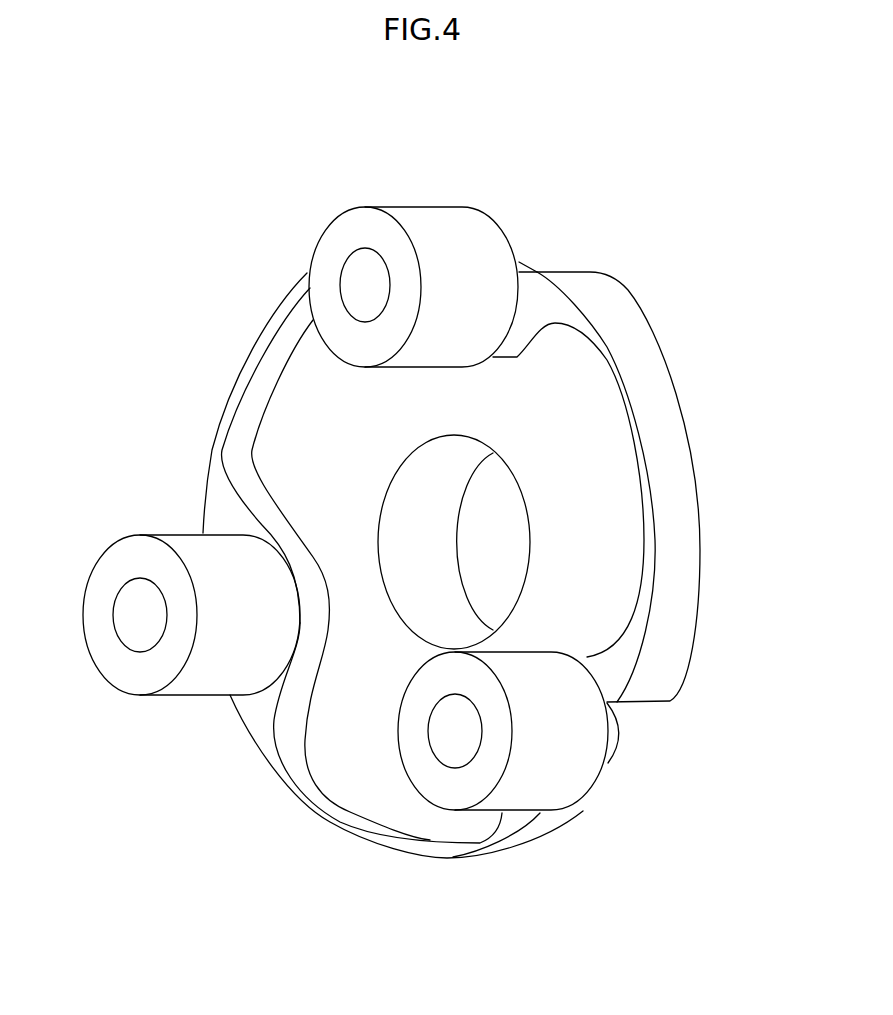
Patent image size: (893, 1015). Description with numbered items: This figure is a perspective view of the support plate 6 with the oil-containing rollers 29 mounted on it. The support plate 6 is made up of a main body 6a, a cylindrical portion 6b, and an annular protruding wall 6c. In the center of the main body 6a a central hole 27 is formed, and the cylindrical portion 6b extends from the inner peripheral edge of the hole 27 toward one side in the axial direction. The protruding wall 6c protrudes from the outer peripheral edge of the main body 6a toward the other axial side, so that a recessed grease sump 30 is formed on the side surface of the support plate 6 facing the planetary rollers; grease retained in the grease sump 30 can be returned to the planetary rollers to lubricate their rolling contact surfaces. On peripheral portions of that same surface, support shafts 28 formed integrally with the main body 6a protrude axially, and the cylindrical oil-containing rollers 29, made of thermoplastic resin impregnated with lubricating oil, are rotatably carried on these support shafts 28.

The support plate 6 is at (466, 512).
The main body 6a is at (573, 417).
The cylindrical portion 6b is at (420, 577).
The annular protruding wall 6c is at (653, 393).
The hole 27 is at (412, 520).
The support shafts 28 is at (357, 272).
The oil-containing rollers 29 is at (432, 226).
The grease sump 30 is at (310, 423).